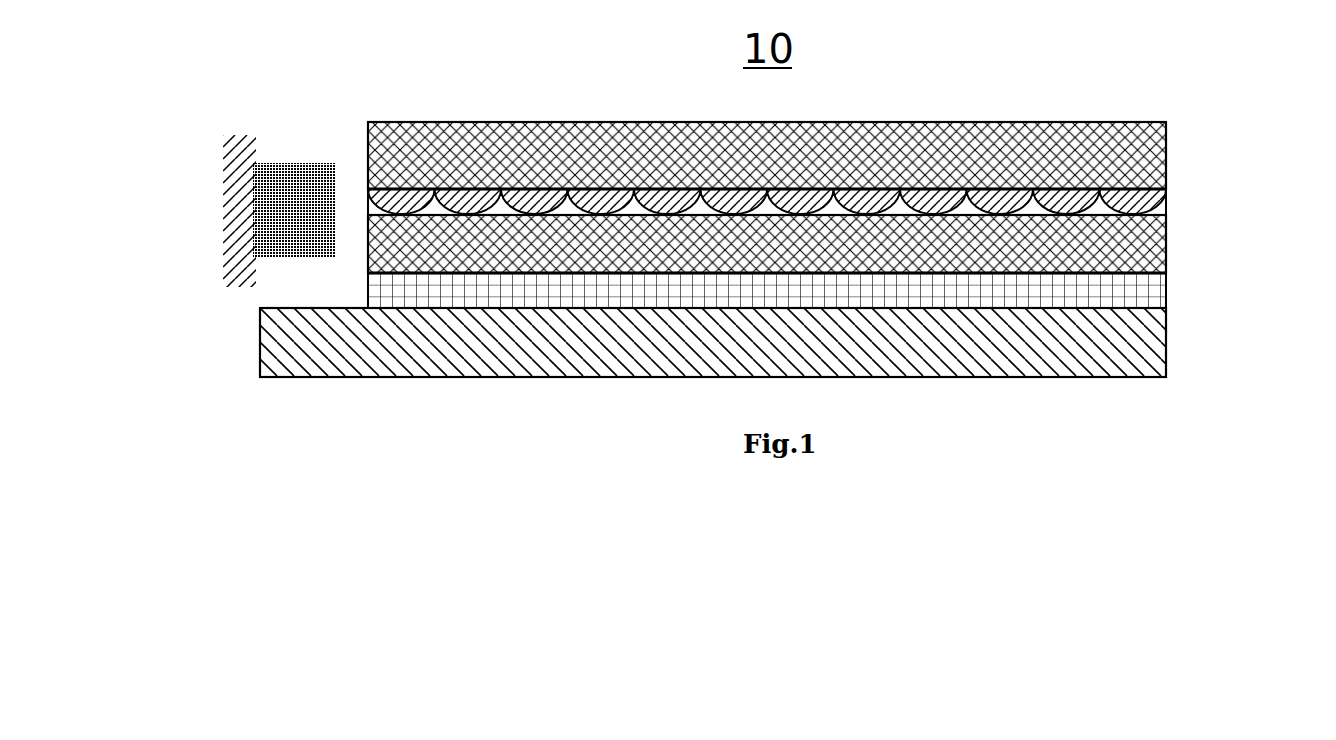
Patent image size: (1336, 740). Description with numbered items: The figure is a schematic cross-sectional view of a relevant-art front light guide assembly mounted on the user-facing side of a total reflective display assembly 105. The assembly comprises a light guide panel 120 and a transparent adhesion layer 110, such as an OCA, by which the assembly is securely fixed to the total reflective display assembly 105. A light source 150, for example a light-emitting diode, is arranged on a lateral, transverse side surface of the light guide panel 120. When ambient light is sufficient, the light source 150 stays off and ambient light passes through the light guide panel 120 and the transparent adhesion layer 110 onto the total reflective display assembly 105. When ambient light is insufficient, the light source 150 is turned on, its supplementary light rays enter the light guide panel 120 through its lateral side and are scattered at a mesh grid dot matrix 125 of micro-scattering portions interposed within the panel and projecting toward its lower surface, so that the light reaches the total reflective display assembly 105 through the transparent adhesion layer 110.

The total reflective display assembly 105 is at (1238, 359).
The transparent adhesion layer 110 is at (1238, 311).
The light guide panel 120 is at (1152, 158).
The mesh grid dot matrix 125 is at (1140, 202).
The light source 150 is at (212, 226).